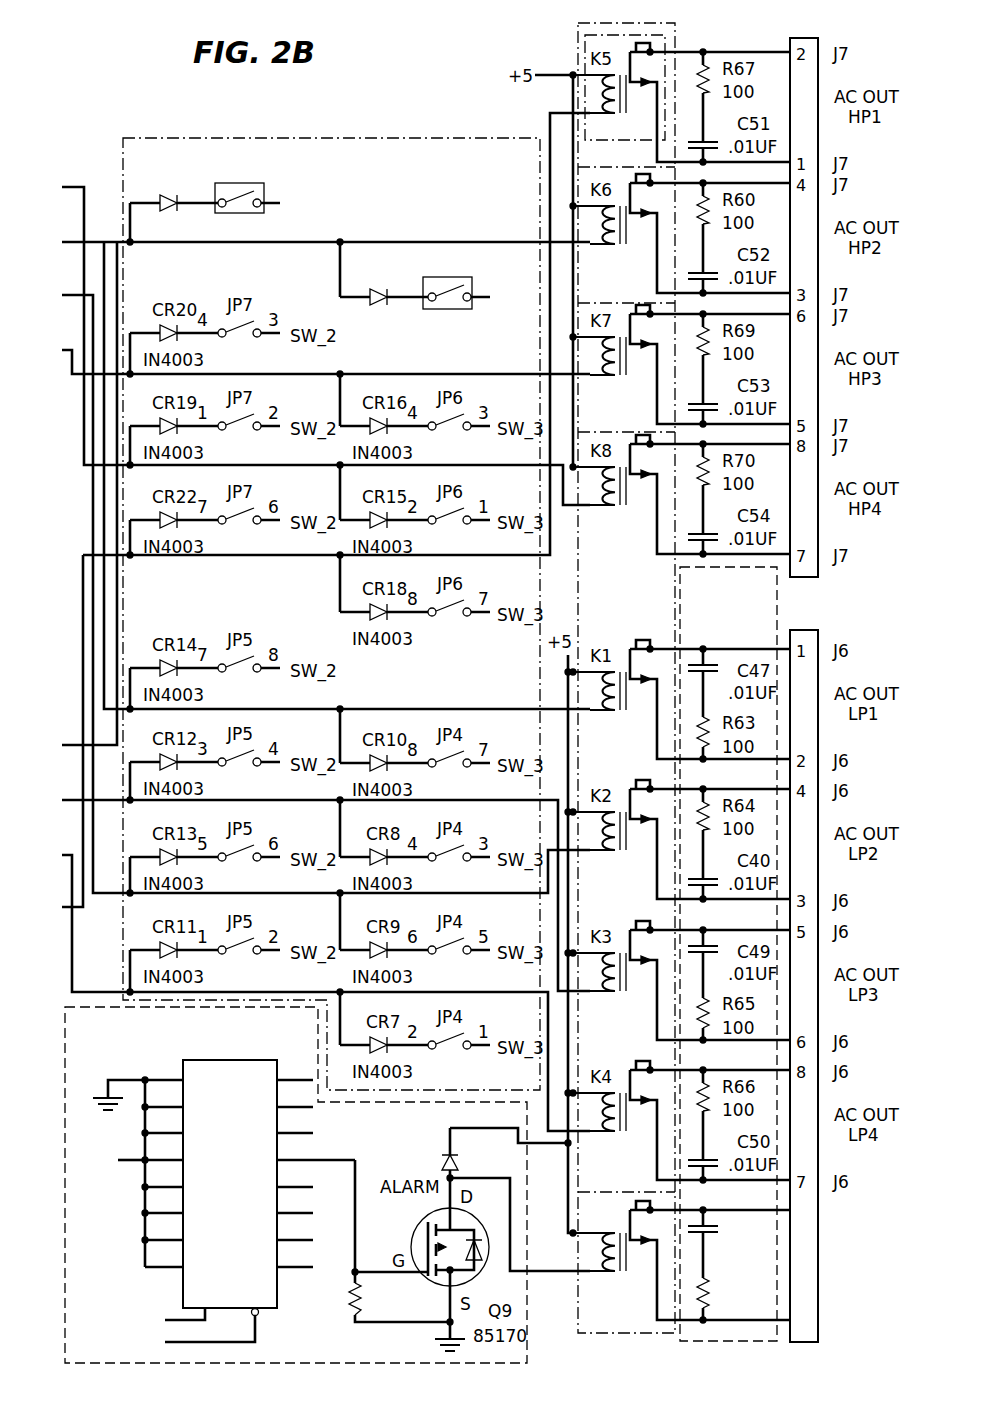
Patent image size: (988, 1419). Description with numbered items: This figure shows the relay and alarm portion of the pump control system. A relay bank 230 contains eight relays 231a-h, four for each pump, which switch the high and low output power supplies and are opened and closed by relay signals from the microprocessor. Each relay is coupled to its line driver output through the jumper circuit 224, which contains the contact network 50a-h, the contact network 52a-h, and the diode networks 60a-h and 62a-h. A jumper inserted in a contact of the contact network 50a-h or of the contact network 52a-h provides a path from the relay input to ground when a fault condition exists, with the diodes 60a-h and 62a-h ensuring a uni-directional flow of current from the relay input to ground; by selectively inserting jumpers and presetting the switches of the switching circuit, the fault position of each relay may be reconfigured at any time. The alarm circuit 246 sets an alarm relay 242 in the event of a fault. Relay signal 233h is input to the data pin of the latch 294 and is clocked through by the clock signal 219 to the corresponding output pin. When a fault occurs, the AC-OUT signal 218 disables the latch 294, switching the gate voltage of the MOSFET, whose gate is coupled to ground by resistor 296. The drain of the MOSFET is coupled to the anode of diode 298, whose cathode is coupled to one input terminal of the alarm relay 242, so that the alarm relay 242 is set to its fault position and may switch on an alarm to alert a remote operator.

The jumper circuit 224 is at (395, 138).
The relay bank 230 is at (578, 48).
The relays 231a-h is at (672, 38).
The diode network 60a-h is at (142, 198).
The contact network 50a-h is at (262, 182).
The diode network 62a-h is at (398, 290).
The contact network 52a-h is at (473, 277).
The latch 294 is at (190, 1058).
The relay signal 233h is at (130, 1163).
The diode 298 is at (442, 1164).
The clock signal 219 is at (178, 1310).
The resistor 296 is at (345, 1298).
The AC-OUT signal 218 is at (258, 1332).
The alarm circuit 246 is at (527, 1340).
The alarm relay 242 is at (637, 1333).